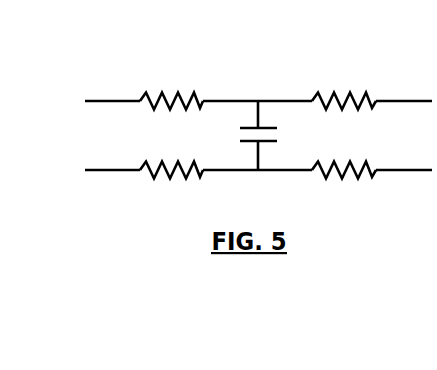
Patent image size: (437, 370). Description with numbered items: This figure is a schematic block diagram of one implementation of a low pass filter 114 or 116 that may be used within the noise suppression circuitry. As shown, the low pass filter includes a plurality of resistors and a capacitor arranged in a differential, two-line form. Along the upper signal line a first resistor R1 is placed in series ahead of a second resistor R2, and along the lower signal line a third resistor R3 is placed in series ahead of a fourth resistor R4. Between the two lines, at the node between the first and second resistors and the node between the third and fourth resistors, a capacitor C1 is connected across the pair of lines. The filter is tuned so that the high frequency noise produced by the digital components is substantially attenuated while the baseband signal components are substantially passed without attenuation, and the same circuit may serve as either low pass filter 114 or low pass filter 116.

The resistor R1 is at (171, 82).
The resistor R2 is at (344, 82).
The resistor R3 is at (171, 190).
The resistor R4 is at (344, 190).
The capacitor C1 is at (238, 135).
The low pass filter 114 is at (258, 169).
The low pass filter 116 is at (258, 169).